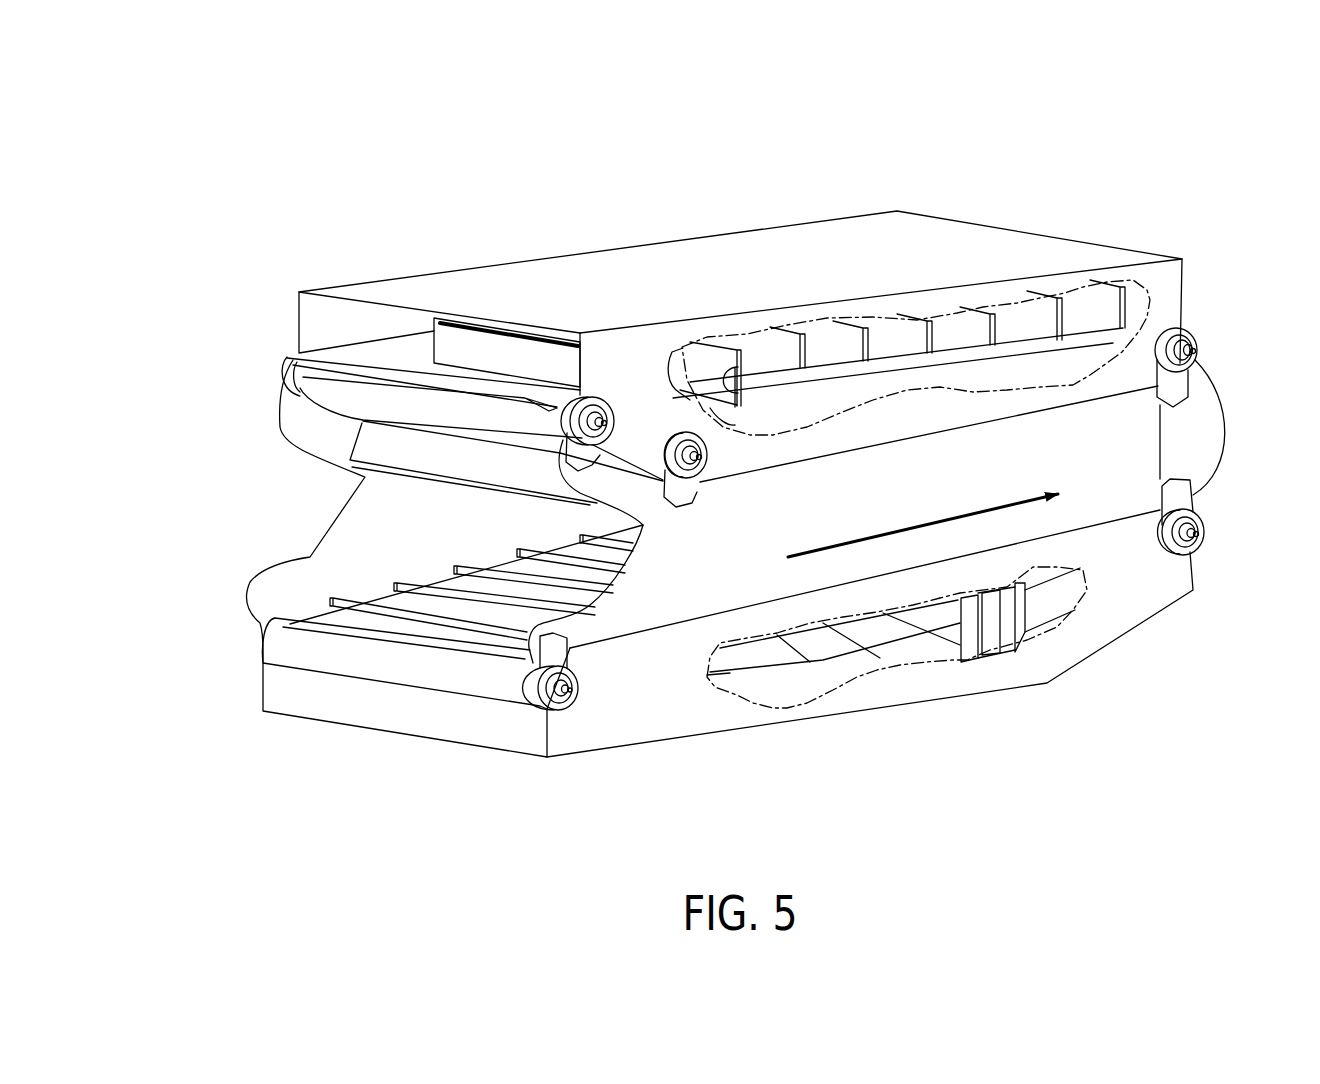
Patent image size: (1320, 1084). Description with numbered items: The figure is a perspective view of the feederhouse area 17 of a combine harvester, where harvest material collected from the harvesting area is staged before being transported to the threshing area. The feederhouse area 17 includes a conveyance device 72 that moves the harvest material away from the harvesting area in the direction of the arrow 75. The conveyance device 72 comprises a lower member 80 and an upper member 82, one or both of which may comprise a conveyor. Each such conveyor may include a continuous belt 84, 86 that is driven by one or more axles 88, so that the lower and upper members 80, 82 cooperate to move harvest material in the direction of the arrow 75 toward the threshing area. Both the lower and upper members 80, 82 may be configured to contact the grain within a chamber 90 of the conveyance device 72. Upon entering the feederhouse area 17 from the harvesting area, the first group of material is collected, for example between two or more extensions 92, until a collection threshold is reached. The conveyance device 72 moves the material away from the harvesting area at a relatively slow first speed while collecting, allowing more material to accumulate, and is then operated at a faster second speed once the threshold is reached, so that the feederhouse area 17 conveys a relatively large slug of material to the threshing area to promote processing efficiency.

The feederhouse area 17 is at (812, 168).
The conveyance device 72 is at (337, 533).
The arrow 75 is at (945, 520).
The lower member 80 is at (404, 668).
The upper member 82 is at (325, 388).
The continuous belt 84 is at (825, 660).
The continuous belt 86 is at (1099, 327).
The axles 88 is at (692, 410).
The chamber 90 is at (398, 566).
The extensions 92 is at (445, 343).